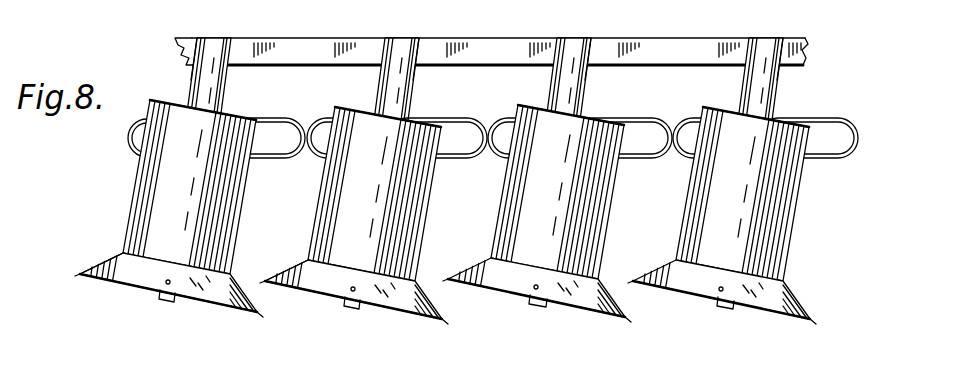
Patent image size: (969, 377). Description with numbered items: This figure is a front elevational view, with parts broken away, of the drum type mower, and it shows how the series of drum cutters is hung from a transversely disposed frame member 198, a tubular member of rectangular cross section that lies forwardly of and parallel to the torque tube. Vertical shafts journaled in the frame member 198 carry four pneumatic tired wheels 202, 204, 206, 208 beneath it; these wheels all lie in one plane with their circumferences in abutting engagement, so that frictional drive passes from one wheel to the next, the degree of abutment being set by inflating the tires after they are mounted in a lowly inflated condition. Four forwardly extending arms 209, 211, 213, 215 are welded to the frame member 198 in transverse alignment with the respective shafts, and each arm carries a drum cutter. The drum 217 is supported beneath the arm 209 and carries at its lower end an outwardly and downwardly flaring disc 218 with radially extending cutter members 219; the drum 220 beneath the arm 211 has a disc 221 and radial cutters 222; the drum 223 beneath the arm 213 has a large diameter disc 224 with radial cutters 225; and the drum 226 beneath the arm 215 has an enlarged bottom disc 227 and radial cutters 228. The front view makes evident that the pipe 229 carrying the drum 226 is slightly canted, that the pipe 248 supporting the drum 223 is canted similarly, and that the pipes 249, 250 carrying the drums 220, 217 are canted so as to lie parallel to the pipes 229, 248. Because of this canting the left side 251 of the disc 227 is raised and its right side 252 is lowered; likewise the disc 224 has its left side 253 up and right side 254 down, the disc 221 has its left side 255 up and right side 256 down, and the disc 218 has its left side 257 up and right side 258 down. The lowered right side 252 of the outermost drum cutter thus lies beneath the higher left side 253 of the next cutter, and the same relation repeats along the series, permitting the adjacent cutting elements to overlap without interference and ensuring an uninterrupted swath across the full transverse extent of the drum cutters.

The frame member 198 is at (303, 38).
The forwardly extending arm 215 is at (236, 43).
The pipe 229 is at (196, 80).
The forwardly extending arm 213 is at (385, 47).
The pipe 248 is at (418, 45).
The forwardly extending arm 211 is at (562, 47).
The pipe 249 is at (587, 46).
The forwardly extending arm 209 is at (749, 48).
The pipe 250 is at (771, 46).
The pneumatic tired wheel 208 is at (285, 118).
The pneumatic tired wheel 206 is at (471, 117).
The pneumatic tired wheel 204 is at (658, 120).
The pneumatic tired wheel 202 is at (843, 118).
The drum 226 is at (176, 200).
The drum 223 is at (362, 210).
The drum 220 is at (541, 212).
The drum or sleeve member 217 is at (732, 211).
The bottom disc 227 is at (107, 257).
The left side of disc 251 is at (96, 264).
The radial cutters 228 is at (81, 274).
The right side of disc 252 is at (237, 300).
The disc 224 is at (340, 282).
The left side of disc 253 is at (292, 263).
The radial cutters 225 is at (265, 283).
The right side of disc 254 is at (432, 305).
The disc 221 is at (505, 273).
The left side of disc 255 is at (467, 262).
The radial cutters 222 is at (538, 300).
The right side of disc 256 is at (612, 306).
The disc 218 is at (704, 277).
The left side of disc 257 is at (659, 270).
The cutter members 219 is at (808, 313).
The right side of disc 258 is at (798, 291).